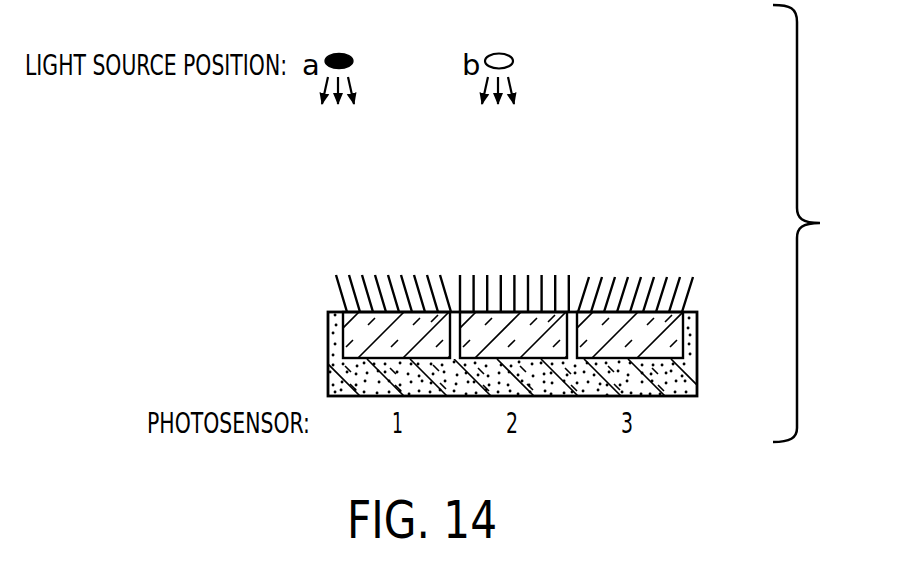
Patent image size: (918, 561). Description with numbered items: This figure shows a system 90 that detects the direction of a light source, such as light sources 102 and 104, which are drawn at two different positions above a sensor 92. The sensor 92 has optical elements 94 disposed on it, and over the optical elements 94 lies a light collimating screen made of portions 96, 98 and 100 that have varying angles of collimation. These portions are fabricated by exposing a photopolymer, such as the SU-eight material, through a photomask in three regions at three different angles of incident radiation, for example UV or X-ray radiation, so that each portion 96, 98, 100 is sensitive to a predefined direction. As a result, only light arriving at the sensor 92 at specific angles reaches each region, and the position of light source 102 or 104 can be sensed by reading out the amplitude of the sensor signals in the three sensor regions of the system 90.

The system 90 is at (681, 90).
The sensor 92 is at (690, 375).
The optical elements 94 is at (670, 338).
The portion of light collimating screen 96 is at (661, 258).
The portion of light collimating screen 98 is at (369, 258).
The portion of light collimating screen 100 is at (518, 258).
The light source 102 is at (352, 59).
The light source 104 is at (512, 59).